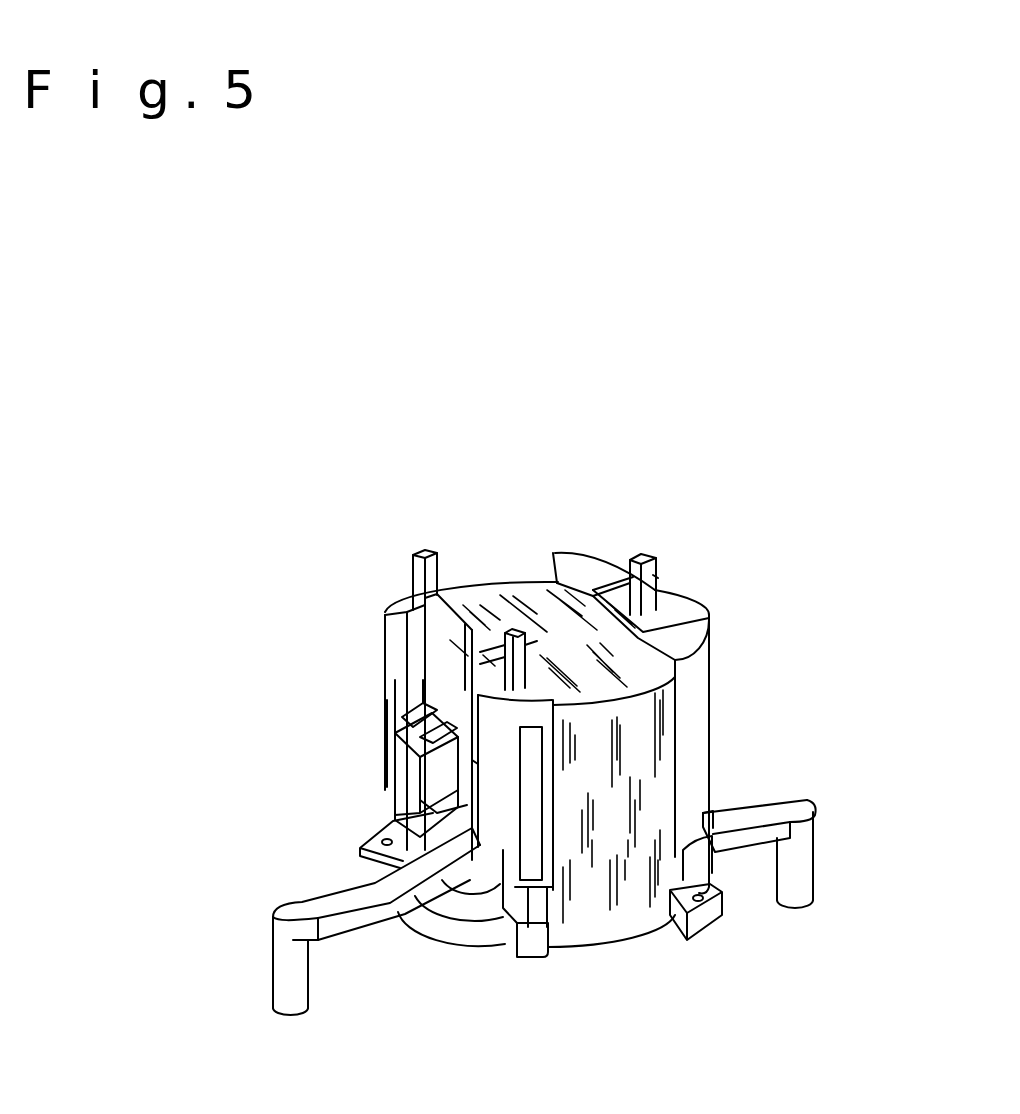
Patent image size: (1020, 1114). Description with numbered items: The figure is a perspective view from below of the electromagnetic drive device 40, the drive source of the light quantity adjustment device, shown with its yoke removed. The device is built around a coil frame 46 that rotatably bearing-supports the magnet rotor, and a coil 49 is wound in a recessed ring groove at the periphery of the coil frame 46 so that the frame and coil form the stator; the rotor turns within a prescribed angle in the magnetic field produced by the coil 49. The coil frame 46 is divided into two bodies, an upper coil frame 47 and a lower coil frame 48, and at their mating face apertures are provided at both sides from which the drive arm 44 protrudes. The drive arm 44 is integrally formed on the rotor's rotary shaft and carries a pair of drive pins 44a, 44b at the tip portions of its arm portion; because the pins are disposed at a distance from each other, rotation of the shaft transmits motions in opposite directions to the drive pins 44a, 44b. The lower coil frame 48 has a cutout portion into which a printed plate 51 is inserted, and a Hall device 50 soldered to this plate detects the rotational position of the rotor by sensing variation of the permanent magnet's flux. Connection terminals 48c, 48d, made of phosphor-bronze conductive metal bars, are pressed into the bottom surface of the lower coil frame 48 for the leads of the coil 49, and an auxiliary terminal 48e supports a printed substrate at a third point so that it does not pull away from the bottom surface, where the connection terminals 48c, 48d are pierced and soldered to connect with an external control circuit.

The electromagnetic drive device 40 is at (736, 546).
The drive arm 44 is at (809, 839).
The drive pin 44a is at (806, 886).
The drive pin 44b is at (300, 990).
The coil frame 46 is at (490, 868).
The upper coil frame 47 is at (526, 963).
The lower coil frame 48 is at (500, 853).
The connection terminal 48c is at (422, 549).
The connection terminal 48d is at (512, 629).
The auxiliary terminal 48e is at (647, 555).
The coil 49 is at (590, 937).
The Hall device 50 is at (408, 767).
The printed plate 51 is at (442, 653).